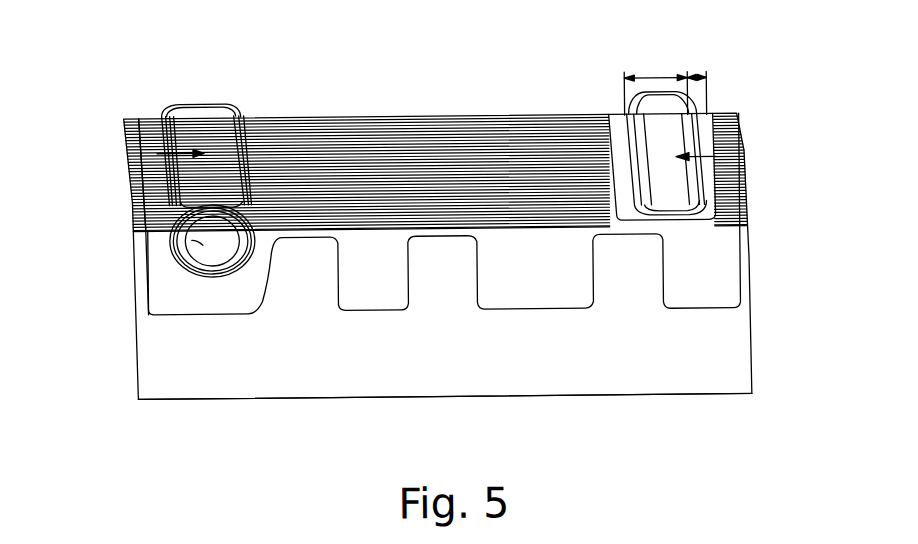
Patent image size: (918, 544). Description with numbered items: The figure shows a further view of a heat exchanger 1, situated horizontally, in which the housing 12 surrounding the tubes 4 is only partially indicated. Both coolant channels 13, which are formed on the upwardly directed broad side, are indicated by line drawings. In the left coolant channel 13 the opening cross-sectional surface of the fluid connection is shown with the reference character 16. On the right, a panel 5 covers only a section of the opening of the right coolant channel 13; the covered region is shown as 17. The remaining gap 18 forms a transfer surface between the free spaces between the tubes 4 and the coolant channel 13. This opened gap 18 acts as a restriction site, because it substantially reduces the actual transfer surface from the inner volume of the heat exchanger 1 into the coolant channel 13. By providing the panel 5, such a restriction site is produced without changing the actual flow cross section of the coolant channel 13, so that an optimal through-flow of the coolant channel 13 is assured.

The heat exchanger 1 is at (766, 250).
The tubes 4 is at (388, 297).
The panel 5 is at (617, 135).
The housing 12 is at (298, 374).
The coolant channels 13 is at (136, 154).
The opening cross-sectional surface of fluid connection 16 is at (172, 225).
The covered region 17 is at (657, 79).
The gap 18 is at (697, 80).